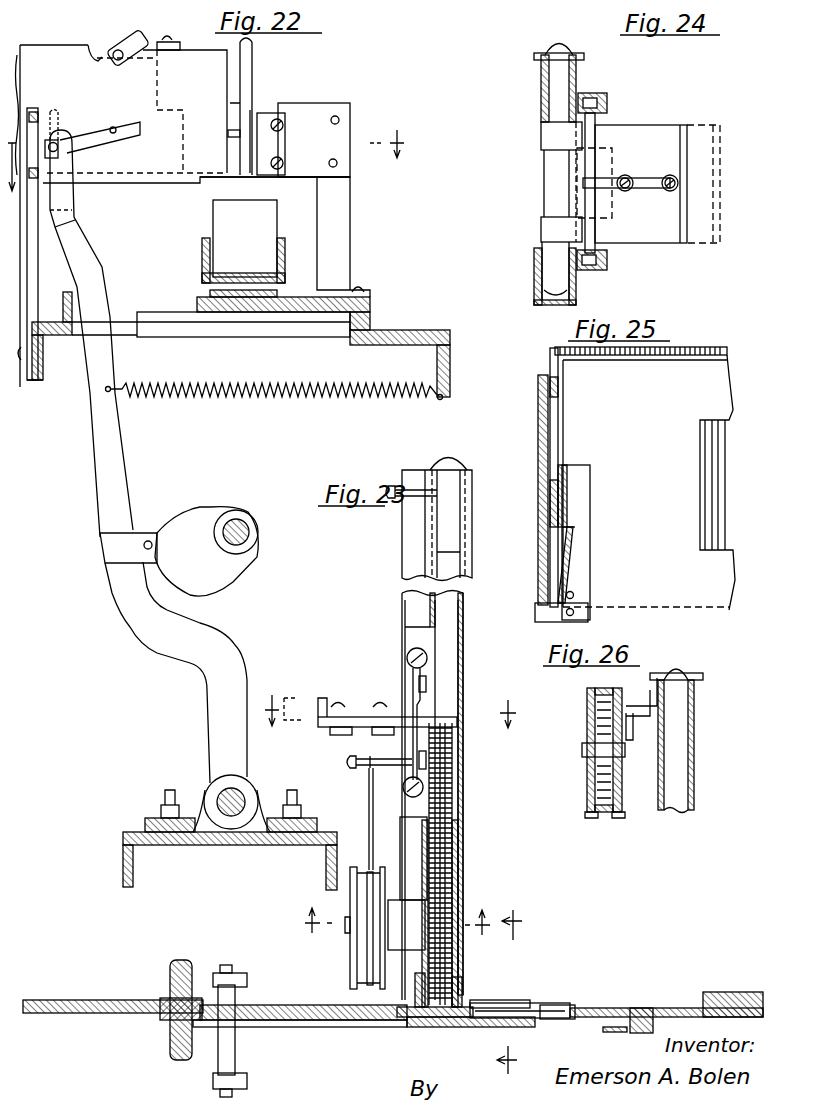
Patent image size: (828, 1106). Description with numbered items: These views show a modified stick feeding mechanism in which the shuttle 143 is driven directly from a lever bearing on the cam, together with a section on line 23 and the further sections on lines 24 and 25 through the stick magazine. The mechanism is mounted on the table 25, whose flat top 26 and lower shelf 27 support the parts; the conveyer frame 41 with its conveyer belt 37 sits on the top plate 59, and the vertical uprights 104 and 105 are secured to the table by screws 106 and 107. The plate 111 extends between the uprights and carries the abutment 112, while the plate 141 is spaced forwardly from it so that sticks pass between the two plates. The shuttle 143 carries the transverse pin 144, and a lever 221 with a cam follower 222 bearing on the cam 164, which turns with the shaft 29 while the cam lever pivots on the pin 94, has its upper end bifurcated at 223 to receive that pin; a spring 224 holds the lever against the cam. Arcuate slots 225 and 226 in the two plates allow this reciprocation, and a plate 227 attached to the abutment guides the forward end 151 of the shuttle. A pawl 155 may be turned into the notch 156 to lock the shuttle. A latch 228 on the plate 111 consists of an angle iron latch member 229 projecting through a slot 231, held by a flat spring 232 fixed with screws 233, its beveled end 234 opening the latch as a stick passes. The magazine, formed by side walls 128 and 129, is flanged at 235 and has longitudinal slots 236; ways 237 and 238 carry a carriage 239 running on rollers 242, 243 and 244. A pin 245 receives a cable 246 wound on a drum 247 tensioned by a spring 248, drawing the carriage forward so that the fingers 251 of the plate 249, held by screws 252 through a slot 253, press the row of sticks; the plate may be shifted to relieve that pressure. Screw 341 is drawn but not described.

In FIG. 22, the plate 141 is at (183, 216).
In FIG. 25, the plate 141 is at (538, 394).
In FIG. 23, the plate 141 is at (480, 1030).
In FIG. 22, the notch 156 is at (97, 57).
In FIG. 22, the pawl 155 is at (146, 40).
In FIG. 22, the vertical upright 105 is at (33, 250).
In FIG. 23, the vertical upright 105 is at (170, 1043).
In FIG. 22, the transverse pin 144 is at (58, 142).
In FIG. 23, the transverse pin 144 is at (232, 1046).
In FIG. 22, the arcuate slot 225 is at (116, 127).
In FIG. 23, the arcuate slot 225 is at (330, 1030).
In FIG. 22, the bifurcated upper end 223 is at (70, 197).
In FIG. 23, the bifurcated upper end 223 is at (239, 979).
In FIG. 22, the lever 221 is at (117, 438).
In FIG. 22, the cam follower 222 is at (150, 532).
In FIG. 22, the cam 164 is at (206, 552).
In FIG. 22, the shaft 29 is at (247, 523).
In FIG. 22, the pin 94 is at (217, 794).
In FIG. 22, the shelf 27 is at (123, 855).
In FIG. 22, the spring 224 is at (226, 400).
In FIG. 22, the table top 26 is at (451, 350).
In FIG. 23, the table top 26 is at (393, 928).
In FIG. 22, the top plate 59 is at (372, 316).
In FIG. 22, the screw 107 is at (18, 367).
In FIG. 22, the conveyer frame 41 is at (202, 246).
In FIG. 22, the conveyer belt 37 is at (205, 271).
In FIG. 22, the vertical upright 104 is at (347, 215).
In FIG. 23, the vertical upright 104 is at (745, 985).
In FIG. 22, the screw 106 is at (362, 291).
In FIG. 22, the plate 111 is at (314, 140).
In FIG. 25, the plate 111 is at (566, 470).
In FIG. 23, the plate 111 is at (586, 1010).
In FIG. 22, the plate 227 is at (266, 117).
In FIG. 23, the plate 227 is at (612, 1033).
In FIG. 22, the angle iron latch member 229 is at (233, 130).
In FIG. 25, the angle iron latch member 229 is at (572, 536).
In FIG. 23, the angle iron latch member 229 is at (570, 1025).
In FIG. 22, the forwardly extending finger 151 is at (231, 175).
In FIG. 23, the forwardly extending finger 151 is at (430, 1022).
In FIG. 22, the section line 23— 23 is at (213, 166).
In FIG. 24, the flange 235 is at (578, 53).
In FIG. 25, the flange 235 is at (705, 363).
In FIG. 26, the flange 235 is at (701, 671).
In FIG. 23, the flange 235 is at (443, 467).
In FIG. 24, the outwardly extending fingers 251 is at (540, 228).
In FIG. 24, the way 237 is at (598, 101).
In FIG. 23, the way 237 is at (410, 888).
In FIG. 24, the way 238 is at (599, 271).
In FIG. 24, the plate 249 is at (648, 184).
In FIG. 24, the slot 253 is at (648, 192).
In FIG. 24, the screws 252 is at (668, 175).
In FIG. 25, the side wall 129 is at (649, 482).
In FIG. 26, the side wall 129 is at (694, 758).
In FIG. 23, the side wall 129 is at (458, 863).
In FIG. 25, the slot 231 is at (568, 528).
In FIG. 25, the flat spring 232 is at (573, 554).
In FIG. 23, the flat spring 232 is at (500, 1003).
In FIG. 25, the screws 233 is at (575, 595).
In FIG. 26, the spring 248 is at (590, 780).
In FIG. 26, the cable 246 is at (600, 694).
In FIG. 23, the cable 246 is at (368, 836).
In FIG. 26, the side wall 128 is at (655, 762).
In FIG. 23, the side wall 128 is at (448, 843).
In FIG. 26, the drum 247 is at (619, 816).
In FIG. 23, the drum 247 is at (350, 899).
In FIG. 23, the longitudinal slots 236 is at (436, 642).
In FIG. 23, the screw 341 is at (407, 657).
In FIG. 23, the roller 244 is at (427, 682).
In FIG. 23, the roller 243 is at (427, 759).
In FIG. 23, the carriage 239 is at (330, 731).
In FIG. 23, the pin 245 is at (355, 771).
In FIG. 23, the roller 242 is at (403, 790).
In FIG. 23, the section line 24— 24 is at (381, 709).
In FIG. 23, the table 25 is at (519, 988).
In FIG. 23, the shuttle 143 is at (79, 1000).
In FIG. 23, the arcuate slot 226 is at (318, 1002).
In FIG. 23, the beveled end 234 is at (473, 1000).
In FIG. 23, the latch 228 is at (540, 1010).
In FIG. 23, the abutment 112 is at (632, 1012).